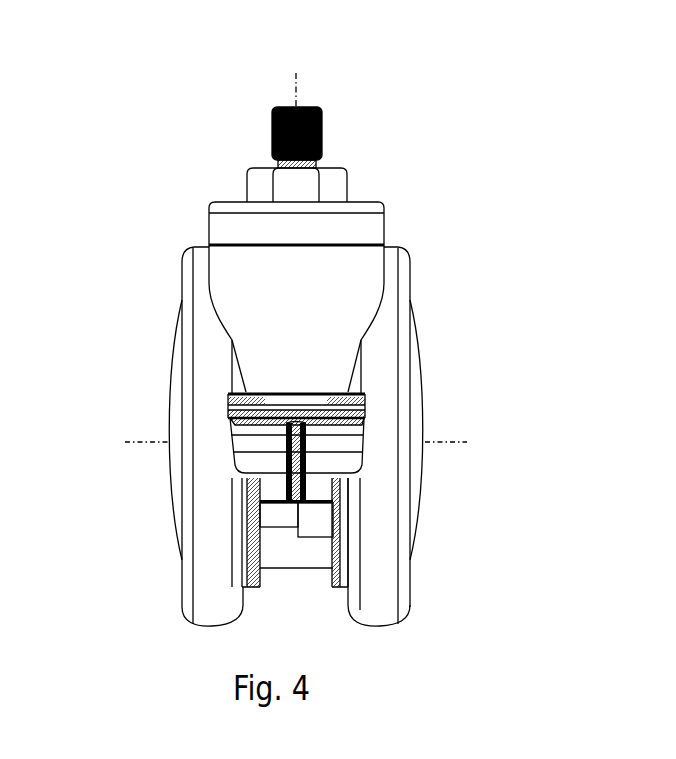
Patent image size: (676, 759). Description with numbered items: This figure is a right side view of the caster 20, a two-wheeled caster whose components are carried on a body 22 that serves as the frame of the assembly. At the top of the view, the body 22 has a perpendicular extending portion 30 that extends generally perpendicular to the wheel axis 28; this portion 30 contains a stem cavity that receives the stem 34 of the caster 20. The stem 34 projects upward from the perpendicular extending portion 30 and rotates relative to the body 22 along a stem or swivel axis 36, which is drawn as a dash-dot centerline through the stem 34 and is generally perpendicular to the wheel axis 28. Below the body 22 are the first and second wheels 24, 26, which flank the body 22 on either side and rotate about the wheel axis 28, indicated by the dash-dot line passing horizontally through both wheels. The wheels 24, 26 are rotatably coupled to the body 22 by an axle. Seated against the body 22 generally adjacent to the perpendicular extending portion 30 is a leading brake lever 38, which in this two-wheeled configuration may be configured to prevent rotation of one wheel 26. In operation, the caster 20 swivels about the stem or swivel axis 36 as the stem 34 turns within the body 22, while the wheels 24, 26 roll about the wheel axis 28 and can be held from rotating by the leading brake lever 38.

The caster 20 is at (99, 224).
The body 22 is at (283, 547).
The first wheel 24 is at (193, 563).
The second wheel 26 is at (403, 585).
The wheel axis 28 is at (296, 444).
The perpendicular extending portion 30 is at (337, 275).
The stem 34 is at (292, 107).
The stem or swivel axis 36 is at (296, 79).
The leading brake lever 38 is at (242, 403).